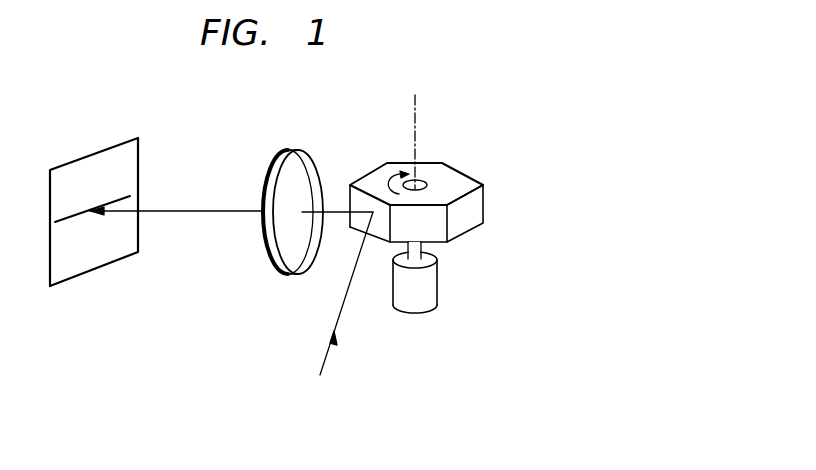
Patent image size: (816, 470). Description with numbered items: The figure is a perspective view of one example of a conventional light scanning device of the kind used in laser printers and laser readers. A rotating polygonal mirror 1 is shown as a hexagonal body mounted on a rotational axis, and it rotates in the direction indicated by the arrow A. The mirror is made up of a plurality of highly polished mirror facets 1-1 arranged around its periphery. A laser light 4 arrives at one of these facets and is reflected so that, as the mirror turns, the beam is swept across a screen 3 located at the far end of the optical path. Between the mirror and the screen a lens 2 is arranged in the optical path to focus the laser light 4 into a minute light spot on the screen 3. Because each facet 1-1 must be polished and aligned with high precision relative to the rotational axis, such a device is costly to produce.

The rotating polygonal mirror 1 is at (453, 178).
The mirror facets 1-1 is at (473, 227).
The lens 2 is at (305, 160).
The screen 3 is at (130, 153).
The laser light 4 is at (328, 348).